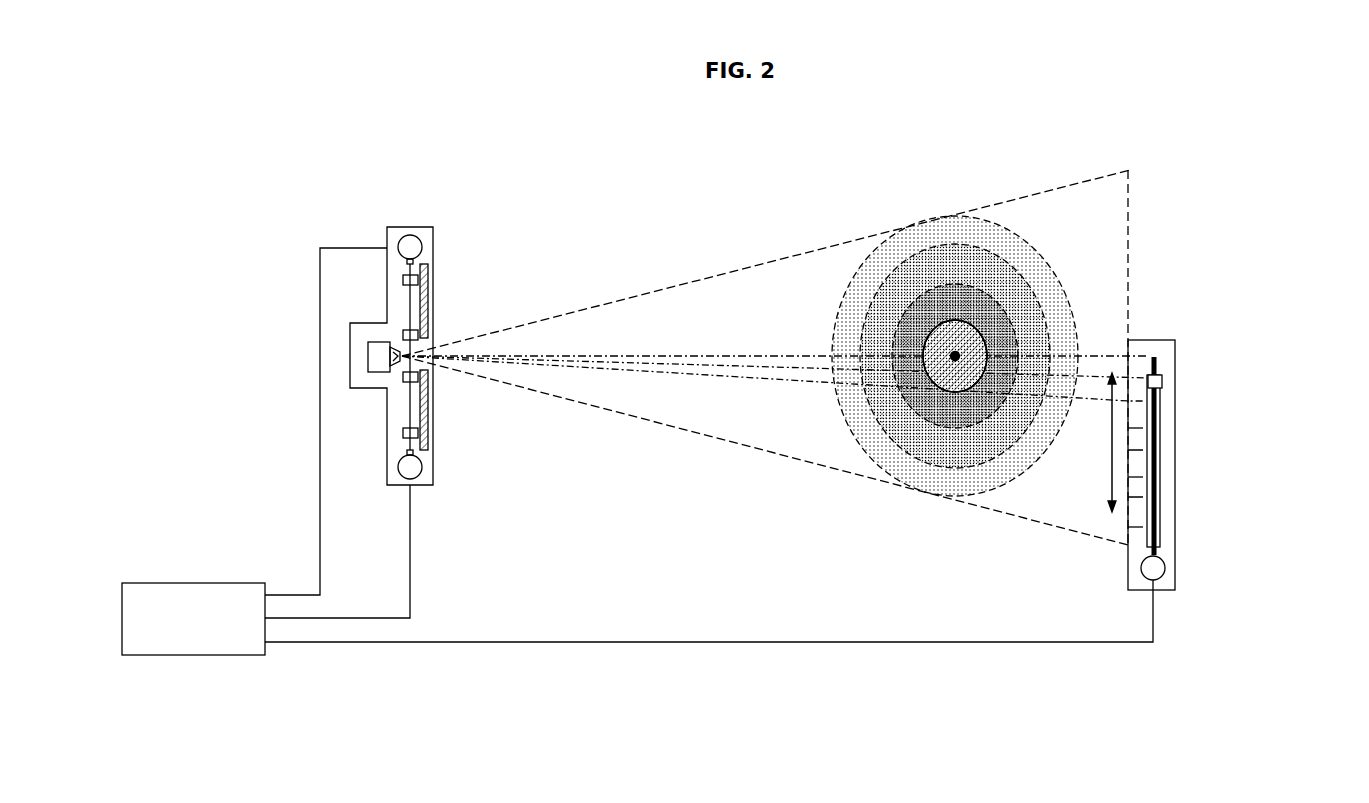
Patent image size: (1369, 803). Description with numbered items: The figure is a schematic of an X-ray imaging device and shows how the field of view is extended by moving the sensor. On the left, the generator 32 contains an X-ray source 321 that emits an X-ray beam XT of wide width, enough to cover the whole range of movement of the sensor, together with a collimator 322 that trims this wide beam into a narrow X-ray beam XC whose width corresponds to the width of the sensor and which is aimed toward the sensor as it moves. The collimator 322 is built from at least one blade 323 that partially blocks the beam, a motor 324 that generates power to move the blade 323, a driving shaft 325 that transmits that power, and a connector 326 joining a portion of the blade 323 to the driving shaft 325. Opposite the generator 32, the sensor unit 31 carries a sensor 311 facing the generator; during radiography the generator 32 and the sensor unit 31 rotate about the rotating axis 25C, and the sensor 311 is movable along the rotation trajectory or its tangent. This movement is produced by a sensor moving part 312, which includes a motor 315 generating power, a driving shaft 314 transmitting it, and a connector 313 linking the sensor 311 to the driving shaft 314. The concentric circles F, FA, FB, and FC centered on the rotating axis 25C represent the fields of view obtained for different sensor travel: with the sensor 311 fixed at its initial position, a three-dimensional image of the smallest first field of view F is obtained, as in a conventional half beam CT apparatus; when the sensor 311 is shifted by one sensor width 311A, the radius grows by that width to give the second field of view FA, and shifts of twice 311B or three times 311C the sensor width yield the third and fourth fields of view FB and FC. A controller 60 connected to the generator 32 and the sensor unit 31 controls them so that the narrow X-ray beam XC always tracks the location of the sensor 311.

The controller 60 is at (236, 582).
The generator 32 is at (433, 246).
The X-ray source 321 is at (368, 358).
The collimator 322 is at (428, 153).
The blade 323 is at (387, 318).
The motor 324 is at (410, 235).
The driving shaft 325 is at (408, 305).
The connector 326 is at (403, 280).
The sensor unit 31 is at (1175, 350).
The sensor 311 is at (1138, 358).
The sensor moving part 312 is at (1318, 372).
The connector 313 is at (1162, 390).
The driving shaft 314 is at (1160, 420).
The motor 315 is at (1170, 568).
The width of the sensor 311A is at (1128, 428).
The twice the sensor width 311B is at (1128, 477).
The three times the sensor width 311C is at (1128, 527).
The rotating axis 25C is at (948, 328).
The first field of view F is at (952, 328).
The second field of view FA is at (915, 398).
The third field of view FB is at (922, 463).
The fourth field of view FC is at (983, 494).
The X-ray beam having a wide width XT is at (722, 272).
The X-ray beam XC is at (630, 366).